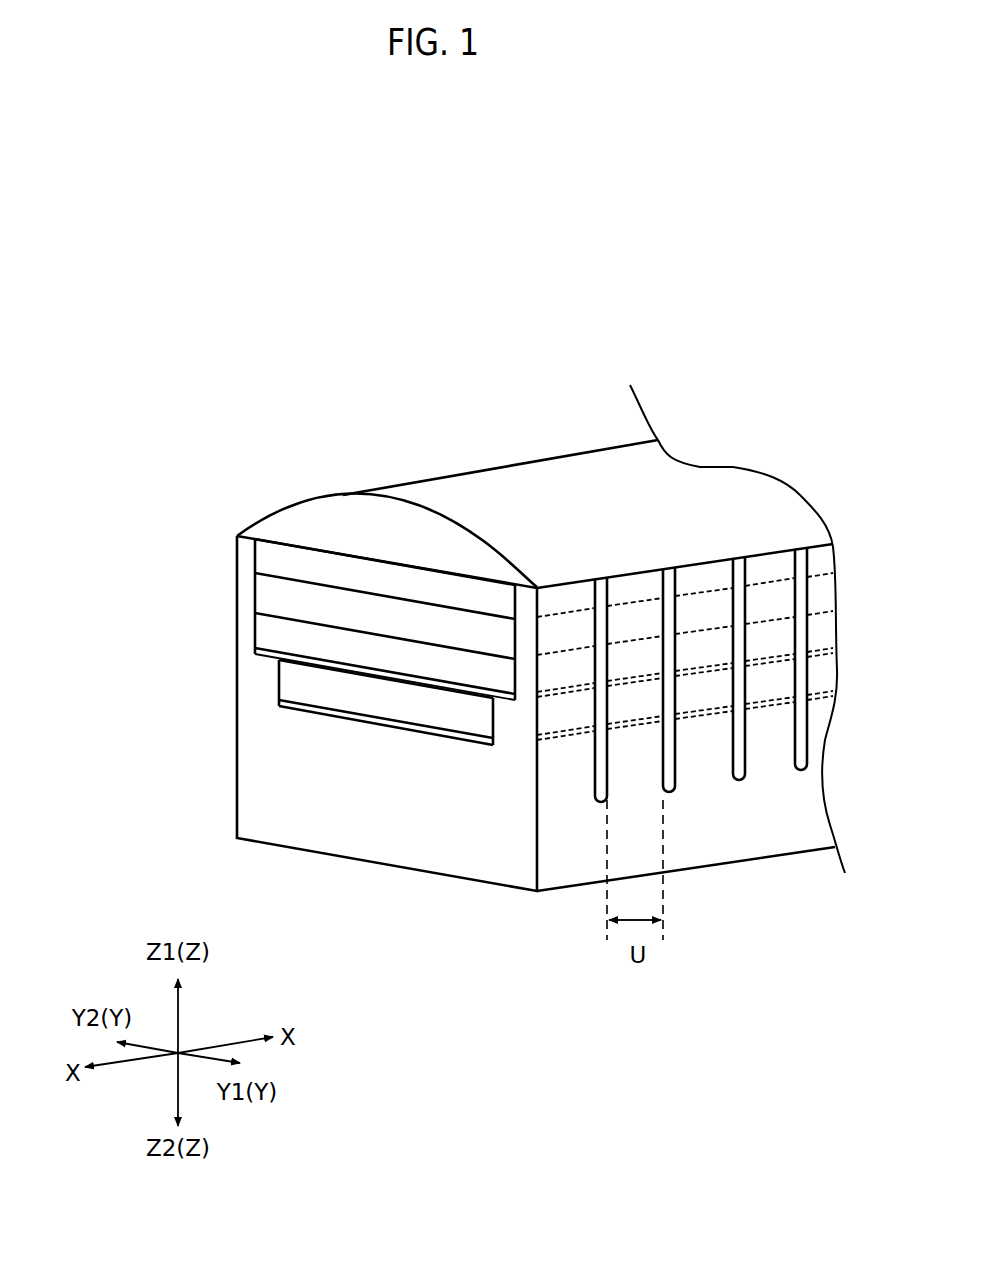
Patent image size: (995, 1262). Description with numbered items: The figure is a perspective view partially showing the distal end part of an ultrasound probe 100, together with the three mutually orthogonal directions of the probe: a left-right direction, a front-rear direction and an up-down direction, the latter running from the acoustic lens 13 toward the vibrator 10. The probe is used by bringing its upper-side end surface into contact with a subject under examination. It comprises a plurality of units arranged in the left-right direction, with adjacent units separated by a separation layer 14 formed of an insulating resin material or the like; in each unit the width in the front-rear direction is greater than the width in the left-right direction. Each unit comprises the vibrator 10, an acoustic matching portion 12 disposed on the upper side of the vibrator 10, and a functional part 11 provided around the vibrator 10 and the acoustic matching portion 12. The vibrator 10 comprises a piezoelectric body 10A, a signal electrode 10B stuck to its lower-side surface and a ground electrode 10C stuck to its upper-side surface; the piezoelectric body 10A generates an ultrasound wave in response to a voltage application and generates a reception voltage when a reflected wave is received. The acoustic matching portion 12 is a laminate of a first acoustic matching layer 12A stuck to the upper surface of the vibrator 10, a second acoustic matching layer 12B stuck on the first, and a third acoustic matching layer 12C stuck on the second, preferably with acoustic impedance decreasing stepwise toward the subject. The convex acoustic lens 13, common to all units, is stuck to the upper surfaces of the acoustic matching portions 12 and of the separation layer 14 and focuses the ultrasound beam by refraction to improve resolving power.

The ultrasound probe 100 is at (182, 429).
The vibrator 10 is at (232, 915).
The piezoelectric body 10A is at (365, 706).
The signal electrode 10B is at (430, 737).
The ground electrode 10C is at (320, 667).
The functional part 11 is at (247, 793).
The acoustic matching portion 12 is at (107, 537).
The first acoustic matching layer 12A is at (270, 640).
The second acoustic matching layer 12B is at (267, 597).
The third acoustic matching layer 12C is at (275, 567).
The acoustic lens 13 is at (538, 473).
The separation layer 14 is at (597, 783).